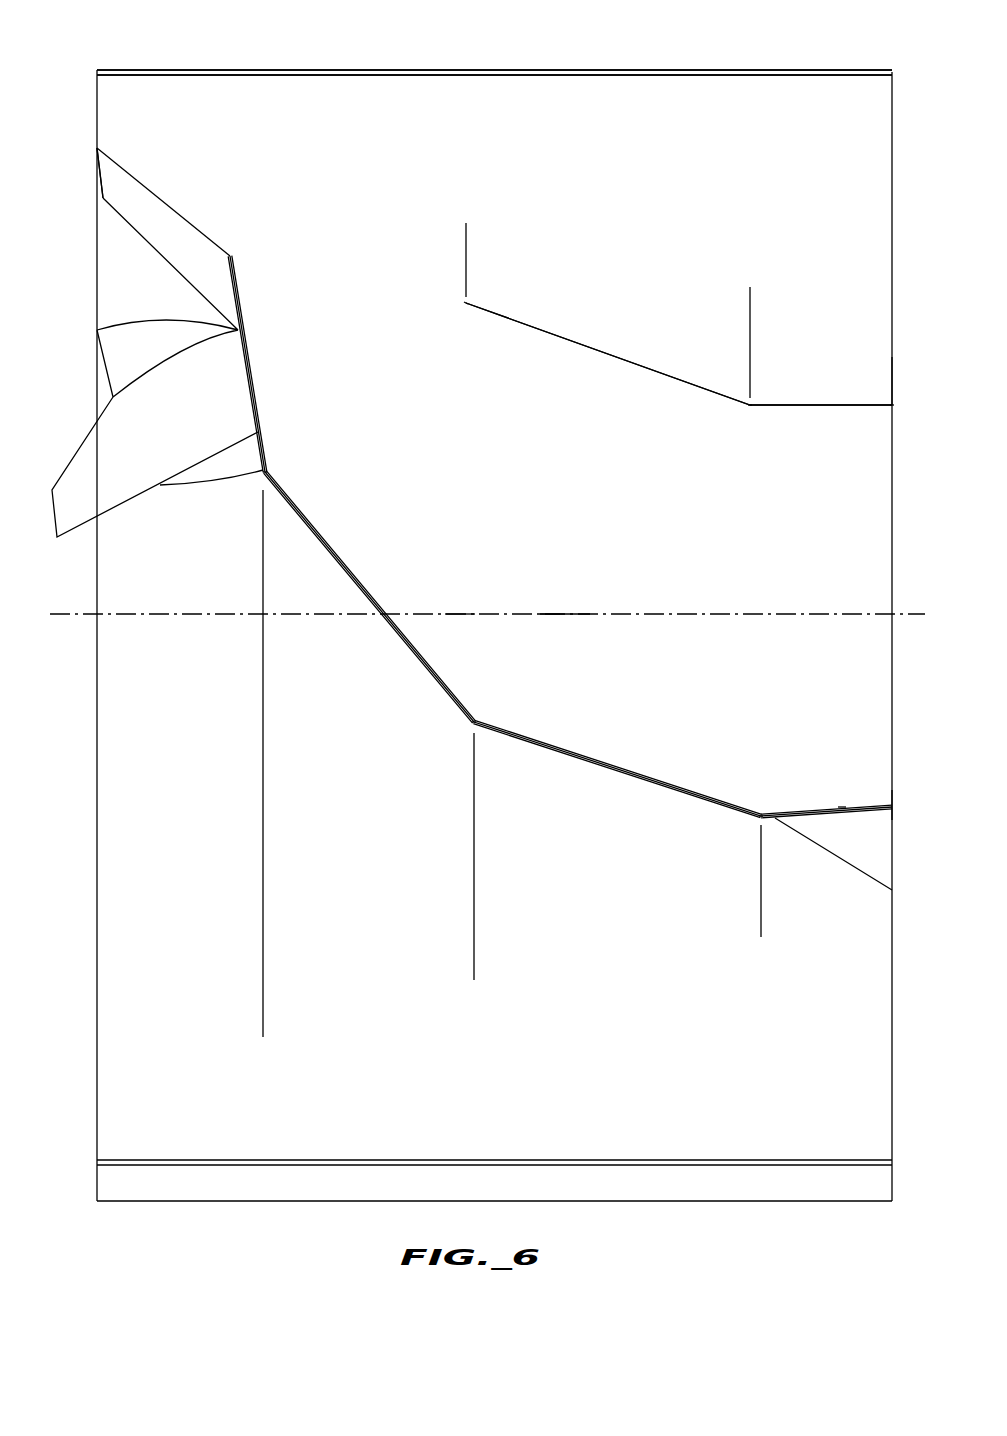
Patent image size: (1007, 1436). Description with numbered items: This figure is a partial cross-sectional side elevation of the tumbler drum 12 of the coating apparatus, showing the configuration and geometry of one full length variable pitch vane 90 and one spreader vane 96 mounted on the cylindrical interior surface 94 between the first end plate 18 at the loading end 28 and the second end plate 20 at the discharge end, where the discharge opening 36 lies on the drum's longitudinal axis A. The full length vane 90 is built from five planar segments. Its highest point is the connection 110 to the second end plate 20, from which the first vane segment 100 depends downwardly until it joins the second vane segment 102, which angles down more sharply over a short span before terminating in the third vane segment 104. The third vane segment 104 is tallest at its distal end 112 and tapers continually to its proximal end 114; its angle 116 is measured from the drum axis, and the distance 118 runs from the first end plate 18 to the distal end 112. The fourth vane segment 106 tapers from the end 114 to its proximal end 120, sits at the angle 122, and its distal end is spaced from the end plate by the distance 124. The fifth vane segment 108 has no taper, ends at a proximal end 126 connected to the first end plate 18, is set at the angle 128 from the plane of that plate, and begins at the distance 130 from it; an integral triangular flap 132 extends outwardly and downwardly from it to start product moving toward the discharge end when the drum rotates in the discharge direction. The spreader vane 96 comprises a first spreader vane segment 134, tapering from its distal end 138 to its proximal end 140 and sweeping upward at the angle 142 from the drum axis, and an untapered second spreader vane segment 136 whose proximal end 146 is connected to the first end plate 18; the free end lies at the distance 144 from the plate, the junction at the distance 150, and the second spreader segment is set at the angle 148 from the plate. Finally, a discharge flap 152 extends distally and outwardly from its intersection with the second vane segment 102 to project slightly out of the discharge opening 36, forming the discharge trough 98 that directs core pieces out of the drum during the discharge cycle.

The tumbler drum 12 is at (503, 70).
The first end plate 18 is at (892, 115).
The second end plate 20 is at (97, 125).
The loading end 28 is at (752, 45).
The discharge opening 36 is at (97, 600).
The full length variable pitch vane 90 is at (430, 593).
The cylindrical interior surface 94 is at (344, 125).
The spreader vane 96 is at (568, 363).
The discharge trough 98 is at (237, 455).
The first vane segment 100 is at (190, 238).
The second vane segment 102 is at (253, 365).
The third vane segment 104 is at (350, 568).
The fourth vane segment 106 is at (647, 775).
The fifth vane segment 108 is at (777, 810).
The connection to second end plate 110 is at (100, 147).
The distal end of third vane segment 112 is at (268, 468).
The proximal end of third vane segment 114 is at (471, 728).
The angle of third vane segment 116 is at (472, 622).
The distance from first end plate to distal end of third vane segment 118 is at (892, 1030).
The proximal end of fourth vane segment 120 is at (760, 808).
The angle of fourth vane segment 122 is at (576, 620).
The distance from first end plate to distal end of fourth vane segment 124 is at (892, 973).
The proximal end of fifth vane segment 126 is at (898, 745).
The angle of fifth vane segment 128 is at (841, 804).
The distance from first end plate to distal end of fifth vane segment 130 is at (892, 931).
The triangular flap 132 is at (868, 877).
The first spreader vane segment 134 is at (610, 353).
The second spreader vane segment 136 is at (825, 405).
The distal end of first spreader vane segment 138 is at (458, 304).
The proximal end of first spreader vane segment 140 is at (750, 408).
The plate angle 142 is at (650, 374).
The distance from first end plate to distal end of first spreader vane segment 144 is at (466, 238).
The plate end 146 is at (892, 406).
The angle of second spreader vane segment 148 is at (890, 357).
The distance from first end plate to distal end of second spreader vane segment 150 is at (892, 300).
The discharge flap 152 is at (97, 440).